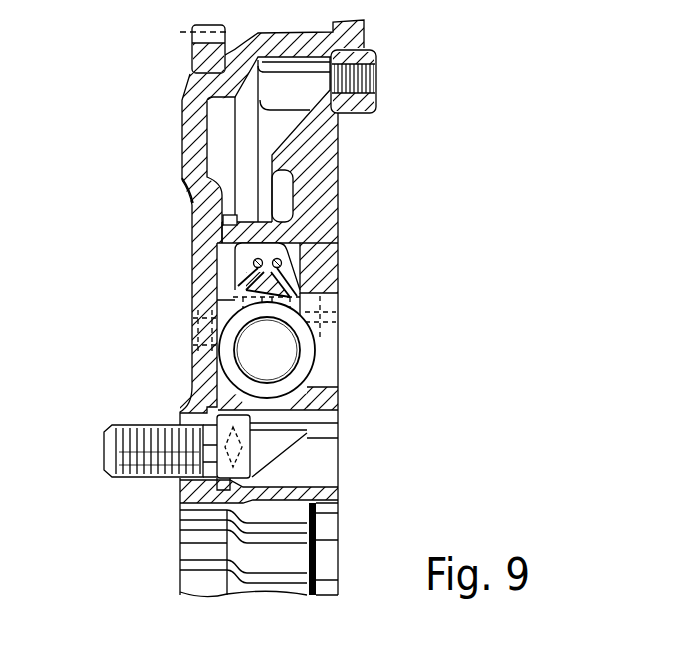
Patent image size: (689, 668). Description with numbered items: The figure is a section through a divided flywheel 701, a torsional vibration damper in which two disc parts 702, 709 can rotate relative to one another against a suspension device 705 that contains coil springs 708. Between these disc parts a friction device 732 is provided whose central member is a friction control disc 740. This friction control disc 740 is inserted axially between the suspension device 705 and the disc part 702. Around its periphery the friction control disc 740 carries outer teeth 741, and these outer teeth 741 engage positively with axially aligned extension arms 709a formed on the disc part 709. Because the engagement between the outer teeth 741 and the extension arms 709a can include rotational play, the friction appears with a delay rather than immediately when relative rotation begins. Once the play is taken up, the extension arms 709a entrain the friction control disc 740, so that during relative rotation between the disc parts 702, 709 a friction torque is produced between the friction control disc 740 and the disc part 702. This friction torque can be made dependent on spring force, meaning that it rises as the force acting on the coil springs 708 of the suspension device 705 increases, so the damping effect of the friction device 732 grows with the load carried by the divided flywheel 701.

The divided flywheel 701 is at (436, 76).
The disc part 702 is at (200, 296).
The suspension device 705 is at (309, 303).
The coil springs 708 is at (312, 350).
The disc part 709 is at (338, 181).
The extension arms 709a is at (192, 200).
The friction device 732 is at (219, 272).
The friction control disc 740 is at (235, 266).
The outer teeth 741 is at (222, 215).